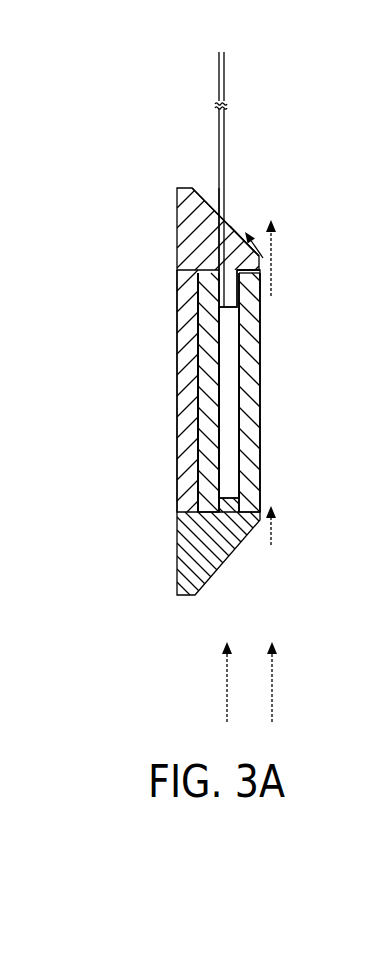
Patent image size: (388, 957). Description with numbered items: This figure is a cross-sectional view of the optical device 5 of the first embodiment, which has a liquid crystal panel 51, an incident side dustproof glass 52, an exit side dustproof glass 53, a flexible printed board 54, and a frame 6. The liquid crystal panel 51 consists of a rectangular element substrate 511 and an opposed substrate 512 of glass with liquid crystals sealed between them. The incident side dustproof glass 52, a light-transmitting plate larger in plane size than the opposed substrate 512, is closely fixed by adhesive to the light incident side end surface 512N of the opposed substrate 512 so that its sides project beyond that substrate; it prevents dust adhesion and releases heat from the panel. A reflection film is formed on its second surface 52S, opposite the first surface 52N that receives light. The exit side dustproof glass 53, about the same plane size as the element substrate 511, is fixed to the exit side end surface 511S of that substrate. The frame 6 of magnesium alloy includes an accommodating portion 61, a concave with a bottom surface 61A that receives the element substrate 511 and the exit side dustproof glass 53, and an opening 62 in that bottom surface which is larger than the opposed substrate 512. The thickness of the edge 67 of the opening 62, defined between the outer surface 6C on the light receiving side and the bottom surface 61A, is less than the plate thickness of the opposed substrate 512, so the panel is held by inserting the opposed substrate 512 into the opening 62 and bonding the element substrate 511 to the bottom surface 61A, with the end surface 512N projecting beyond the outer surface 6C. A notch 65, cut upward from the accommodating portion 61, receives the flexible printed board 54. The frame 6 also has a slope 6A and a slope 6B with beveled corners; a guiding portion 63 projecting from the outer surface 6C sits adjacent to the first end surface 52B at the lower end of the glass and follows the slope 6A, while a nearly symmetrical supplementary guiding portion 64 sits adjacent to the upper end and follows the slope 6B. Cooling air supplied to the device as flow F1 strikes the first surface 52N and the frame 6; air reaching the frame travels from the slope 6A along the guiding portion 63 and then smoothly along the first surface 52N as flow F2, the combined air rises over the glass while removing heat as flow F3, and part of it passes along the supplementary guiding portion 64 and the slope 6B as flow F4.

The optical device 5 is at (144, 131).
The flexible printed board 54 is at (225, 71).
The frame 6 is at (176, 218).
The slope 6A is at (206, 584).
The slope 6B is at (209, 191).
The outer surface 6C is at (242, 300).
The accommodating portion 61 is at (192, 282).
The bottom surface 61A is at (198, 303).
The opening 62 is at (229, 335).
The guiding portion 63 is at (232, 500).
The supplementary guiding portion 64 is at (247, 245).
The notch 65 is at (218, 250).
The edge 67 is at (252, 306).
The liquid crystal panel 51 is at (93, 358).
The element substrate 511 is at (203, 368).
The opposed substrate 512 is at (203, 384).
The exit side end surface 511S is at (197, 428).
The light incident side end surface 512N is at (221, 440).
The exit side dustproof glass 53 is at (187, 348).
The incident side dustproof glass 52 is at (252, 418).
The first surface 52N is at (261, 372).
The second surface 52S is at (240, 398).
The first end surface 52B is at (255, 520).
The flow F1 is at (274, 684).
The flow F2 is at (278, 520).
The flow F3 is at (275, 245).
The flow F4 is at (262, 250).